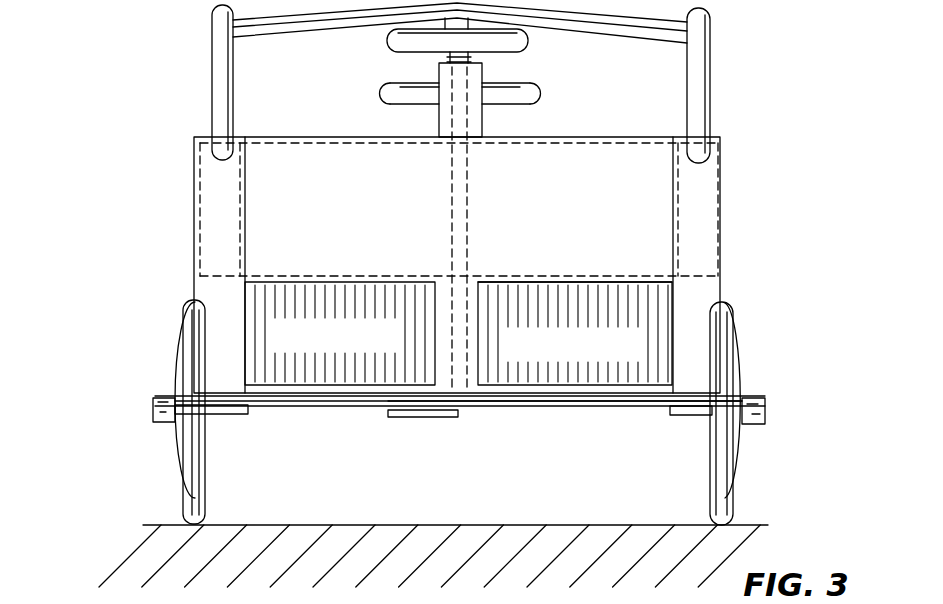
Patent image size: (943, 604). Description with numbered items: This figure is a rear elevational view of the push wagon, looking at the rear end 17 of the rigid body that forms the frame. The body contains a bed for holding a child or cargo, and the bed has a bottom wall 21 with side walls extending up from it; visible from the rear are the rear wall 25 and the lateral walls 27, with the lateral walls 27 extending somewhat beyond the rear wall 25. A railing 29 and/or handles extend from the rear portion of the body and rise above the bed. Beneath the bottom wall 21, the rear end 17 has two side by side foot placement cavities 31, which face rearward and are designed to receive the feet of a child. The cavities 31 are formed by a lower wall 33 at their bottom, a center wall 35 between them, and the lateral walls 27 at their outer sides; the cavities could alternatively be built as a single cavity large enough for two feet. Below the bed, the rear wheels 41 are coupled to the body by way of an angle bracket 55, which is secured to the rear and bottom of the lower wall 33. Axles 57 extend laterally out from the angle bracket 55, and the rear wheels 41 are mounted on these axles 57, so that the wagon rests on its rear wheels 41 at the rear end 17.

The rear end 17 is at (658, 245).
The bottom wall 21 is at (530, 262).
The rear wall 25 is at (610, 243).
The lateral walls 27 is at (193, 220).
The railing 29 is at (220, 48).
The foot placement cavities 31 is at (388, 333).
The lower wall 33 is at (541, 395).
The center wall 35 is at (473, 343).
The rear wheels 41 is at (182, 495).
The angle bracket 55 is at (607, 398).
The axles 57 is at (222, 415).